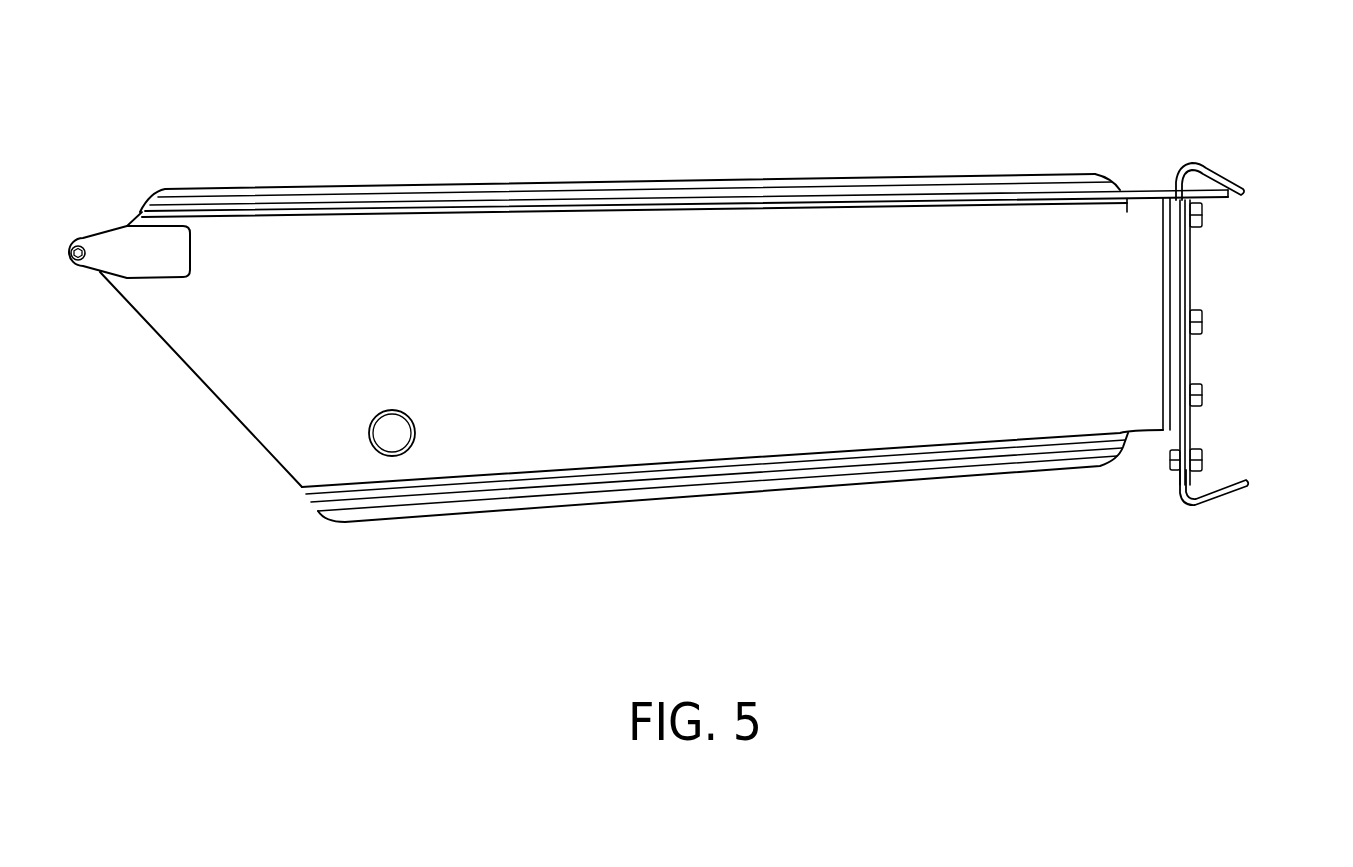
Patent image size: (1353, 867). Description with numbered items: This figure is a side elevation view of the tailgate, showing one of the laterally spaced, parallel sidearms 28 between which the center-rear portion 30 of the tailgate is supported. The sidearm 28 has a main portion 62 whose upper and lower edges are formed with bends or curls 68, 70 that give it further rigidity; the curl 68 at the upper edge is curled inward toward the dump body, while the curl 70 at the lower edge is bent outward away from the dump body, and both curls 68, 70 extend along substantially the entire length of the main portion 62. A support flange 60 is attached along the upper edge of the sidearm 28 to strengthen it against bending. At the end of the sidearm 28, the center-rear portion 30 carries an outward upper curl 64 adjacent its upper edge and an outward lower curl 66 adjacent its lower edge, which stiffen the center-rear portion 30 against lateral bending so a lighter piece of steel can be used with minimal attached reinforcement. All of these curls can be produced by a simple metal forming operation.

The sidearm 28 is at (852, 255).
The center-rear portion 30 is at (1192, 260).
The support flange 60 is at (1152, 178).
The main portion 62 is at (438, 265).
The upper curl 64 is at (1220, 178).
The lower curl 66 is at (1222, 500).
The upper sidearm curl 68 is at (430, 188).
The lower sidearm curl 70 is at (643, 494).